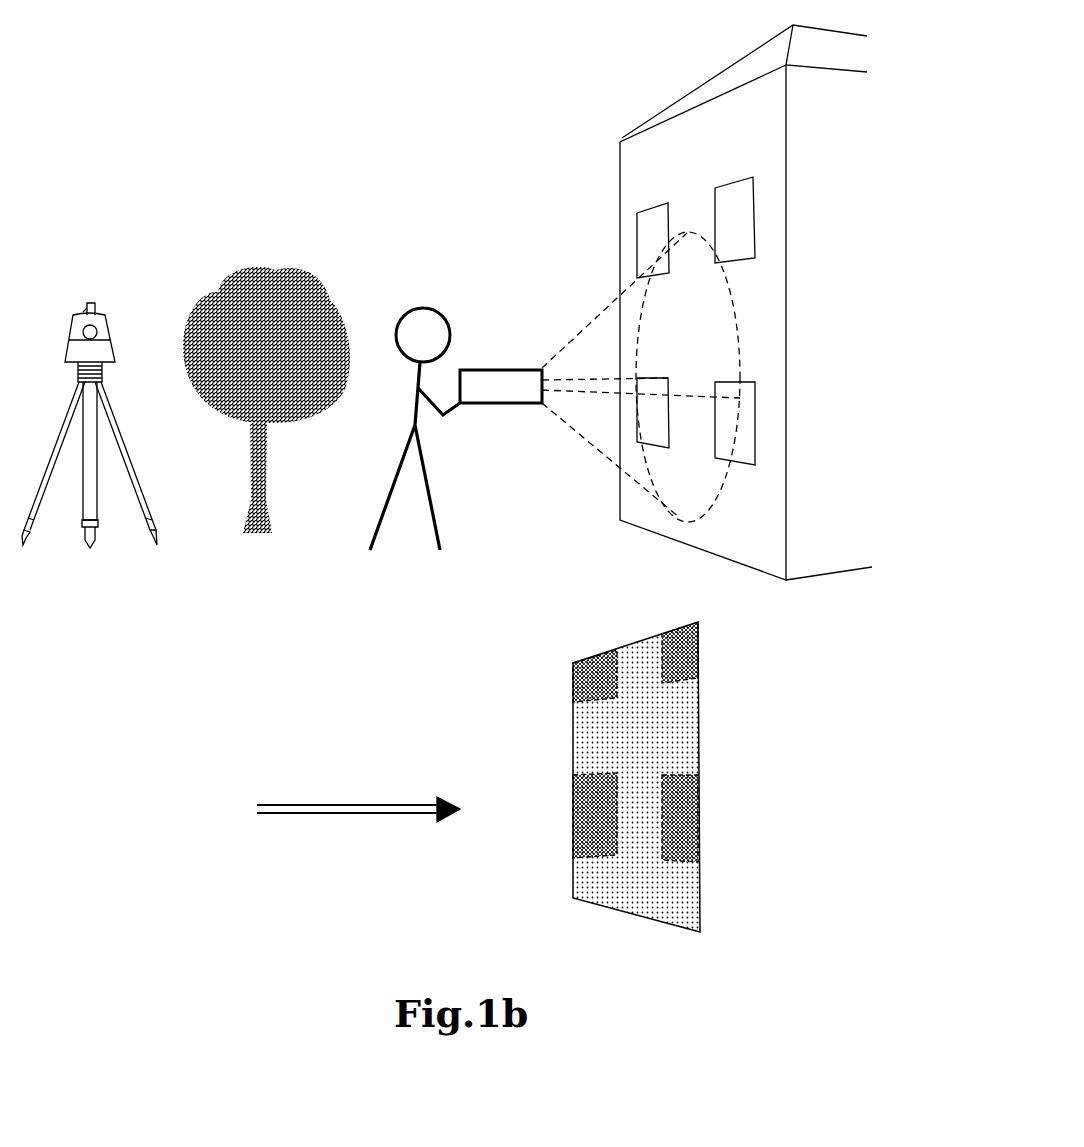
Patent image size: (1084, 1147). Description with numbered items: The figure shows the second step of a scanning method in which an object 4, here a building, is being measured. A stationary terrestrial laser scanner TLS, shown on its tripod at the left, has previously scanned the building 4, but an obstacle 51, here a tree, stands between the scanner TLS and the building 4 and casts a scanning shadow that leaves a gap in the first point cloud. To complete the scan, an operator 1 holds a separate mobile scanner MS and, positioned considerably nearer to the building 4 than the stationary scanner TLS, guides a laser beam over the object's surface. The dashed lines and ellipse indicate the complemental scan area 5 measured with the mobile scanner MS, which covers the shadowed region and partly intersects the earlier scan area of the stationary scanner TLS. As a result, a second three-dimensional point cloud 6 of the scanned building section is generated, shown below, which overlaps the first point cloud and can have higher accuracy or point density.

The stationary terrestrial laser scanner TLS is at (105, 320).
The obstacle (tree) 51 is at (222, 412).
The user 1 is at (410, 288).
The mobile scanner MS is at (475, 403).
The complemental scan area 5 is at (596, 305).
The object (building) 4 is at (691, 171).
The second 3D point cloud 6 is at (560, 663).